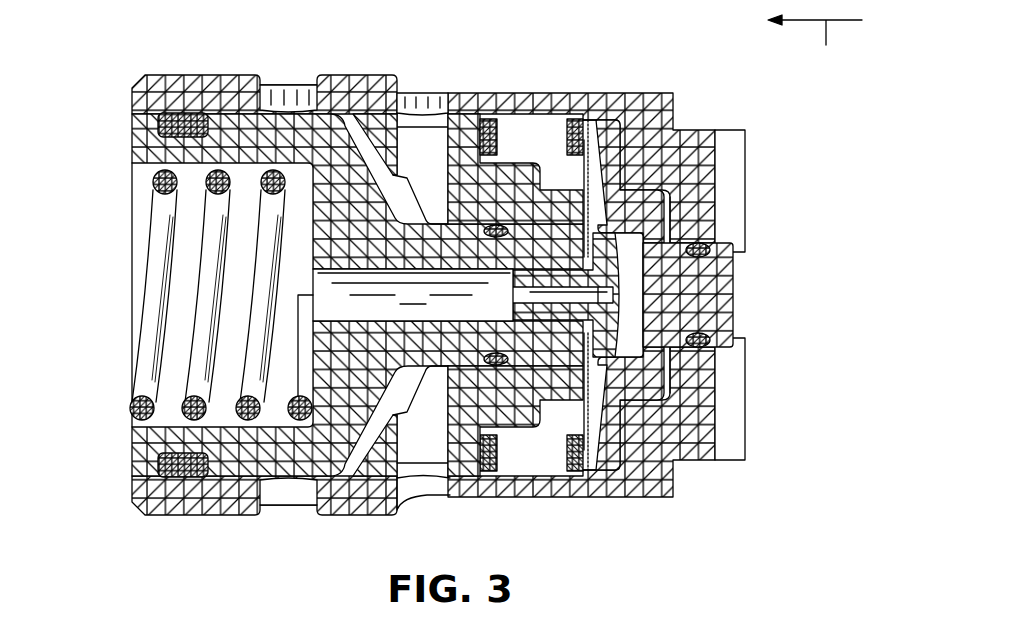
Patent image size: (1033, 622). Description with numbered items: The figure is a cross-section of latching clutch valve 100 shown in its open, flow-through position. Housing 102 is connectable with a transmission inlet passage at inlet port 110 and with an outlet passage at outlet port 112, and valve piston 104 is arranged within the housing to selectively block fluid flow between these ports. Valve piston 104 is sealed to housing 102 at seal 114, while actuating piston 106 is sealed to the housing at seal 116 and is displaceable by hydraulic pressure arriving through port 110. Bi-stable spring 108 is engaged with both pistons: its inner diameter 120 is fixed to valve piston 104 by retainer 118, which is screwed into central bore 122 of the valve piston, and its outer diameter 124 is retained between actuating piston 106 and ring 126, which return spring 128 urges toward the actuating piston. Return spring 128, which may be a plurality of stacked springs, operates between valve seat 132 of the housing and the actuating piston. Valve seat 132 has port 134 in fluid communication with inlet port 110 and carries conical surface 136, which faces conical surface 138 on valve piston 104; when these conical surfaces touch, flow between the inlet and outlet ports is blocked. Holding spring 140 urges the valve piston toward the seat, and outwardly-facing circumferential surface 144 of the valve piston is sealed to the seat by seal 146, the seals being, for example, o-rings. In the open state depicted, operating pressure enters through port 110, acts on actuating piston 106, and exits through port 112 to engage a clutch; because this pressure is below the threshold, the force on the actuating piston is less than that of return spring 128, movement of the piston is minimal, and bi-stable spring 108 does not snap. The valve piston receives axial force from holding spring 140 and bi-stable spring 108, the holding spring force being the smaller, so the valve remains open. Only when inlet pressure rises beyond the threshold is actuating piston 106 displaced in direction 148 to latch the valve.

The latching clutch valve 100 is at (106, 130).
The housing 102 is at (660, 476).
The valve piston 104 is at (230, 113).
The actuating piston 106 is at (722, 290).
The bi-stable spring 108 is at (642, 187).
The inlet port 110 is at (430, 92).
The outlet port 112 is at (283, 87).
The seal 114 is at (182, 113).
The seal 116 is at (706, 337).
The retainer 118 is at (607, 267).
The inner diameter 120 is at (660, 217).
The central bore 122 is at (413, 295).
The outer diameter 124 is at (620, 137).
The ring 126 is at (595, 135).
The return spring 128 is at (574, 118).
The valve seat 132 is at (481, 473).
The port 134 is at (400, 502).
The conical surface 136 is at (355, 158).
The conical surface 138 is at (362, 162).
The holding spring 140 is at (130, 405).
The outwardly-facing circumferential surface 144 is at (552, 440).
The seal 146 is at (496, 225).
The direction 148 is at (815, 44).